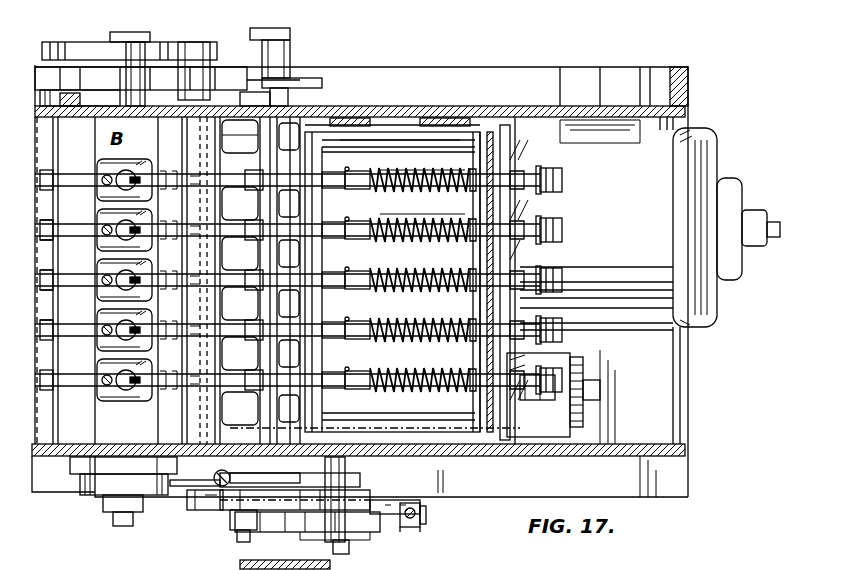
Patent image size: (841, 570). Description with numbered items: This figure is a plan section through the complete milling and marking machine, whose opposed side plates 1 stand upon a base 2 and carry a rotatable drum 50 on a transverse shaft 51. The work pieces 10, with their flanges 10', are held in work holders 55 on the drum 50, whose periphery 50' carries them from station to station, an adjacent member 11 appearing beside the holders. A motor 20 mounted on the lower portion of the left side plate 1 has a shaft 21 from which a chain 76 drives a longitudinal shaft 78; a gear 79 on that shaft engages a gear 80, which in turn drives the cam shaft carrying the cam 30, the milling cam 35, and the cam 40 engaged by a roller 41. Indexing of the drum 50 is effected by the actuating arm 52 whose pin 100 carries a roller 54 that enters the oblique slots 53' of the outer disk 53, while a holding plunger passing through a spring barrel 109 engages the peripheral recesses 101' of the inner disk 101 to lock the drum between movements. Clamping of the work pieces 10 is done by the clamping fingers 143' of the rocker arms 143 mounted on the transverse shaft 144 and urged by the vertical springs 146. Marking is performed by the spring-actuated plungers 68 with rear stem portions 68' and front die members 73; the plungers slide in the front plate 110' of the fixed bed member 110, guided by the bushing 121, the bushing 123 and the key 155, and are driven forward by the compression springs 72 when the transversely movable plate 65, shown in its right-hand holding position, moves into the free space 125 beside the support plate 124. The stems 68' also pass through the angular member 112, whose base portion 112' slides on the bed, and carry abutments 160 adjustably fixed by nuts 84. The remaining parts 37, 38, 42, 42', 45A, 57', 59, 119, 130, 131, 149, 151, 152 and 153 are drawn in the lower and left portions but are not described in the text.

The side plates 1 is at (535, 102).
The base 2 is at (640, 500).
The work pieces 10 is at (149, 280).
The flanges 10' is at (68, 309).
The bobbin support 11 is at (140, 317).
The motor 20 is at (720, 166).
The shaft 21 is at (778, 226).
The cam 30 is at (310, 78).
The cam 35 is at (205, 511).
The bar 37 is at (292, 533).
The bolt 38 is at (346, 464).
The cam 40 is at (240, 515).
The roller 41 is at (245, 542).
The nut 42 is at (335, 548).
The nut 42' is at (391, 534).
The rack 45A is at (240, 565).
The drum 50 is at (77, 280).
The strip 50' is at (69, 280).
The transverse shaft 51 is at (115, 50).
The actuating arm 52 is at (290, 36).
The disk 53 is at (198, 57).
The slots 53' is at (134, 60).
The roller 54 is at (290, 48).
The work holders 55 is at (97, 226).
The pin 57' is at (168, 508).
The knob 59 is at (427, 513).
The transversely movable plate 65 is at (312, 140).
The marking plungers 68 is at (462, 271).
The stem portions 68' is at (534, 266).
The compression springs 72 is at (420, 270).
The die members 73 is at (257, 216).
The chain 76 is at (430, 216).
The longitudinal shaft 78 is at (540, 415).
The gear 79 is at (580, 375).
The gear 80 is at (605, 390).
The nuts 84 is at (563, 233).
The pin 100 is at (290, 57).
The disk 101 is at (167, 72).
The peripheral recesses 101' is at (120, 65).
The spring barrel 109 is at (72, 72).
The bed member 110 is at (381, 285).
The front plate 110' is at (329, 280).
The angular member 112 is at (506, 261).
The longitudinal base portion 112' is at (494, 245).
The lug 119 is at (97, 261).
The bushing 121 is at (506, 152).
The bushing 123 is at (346, 171).
The support plate 124 is at (305, 93).
The free space 125 is at (323, 140).
The screw 130 is at (215, 472).
The bar 131 is at (218, 483).
The rocker arms 143 is at (287, 268).
The clamping fingers 143' is at (141, 280).
The transverse shaft 144 is at (215, 140).
The vertical springs 146 is at (355, 165).
The bar 149 is at (320, 480).
The pin 151 is at (418, 530).
The bar 152 is at (395, 502).
The pin 153 is at (195, 500).
The key 155 is at (425, 169).
The abutments 160 is at (560, 192).